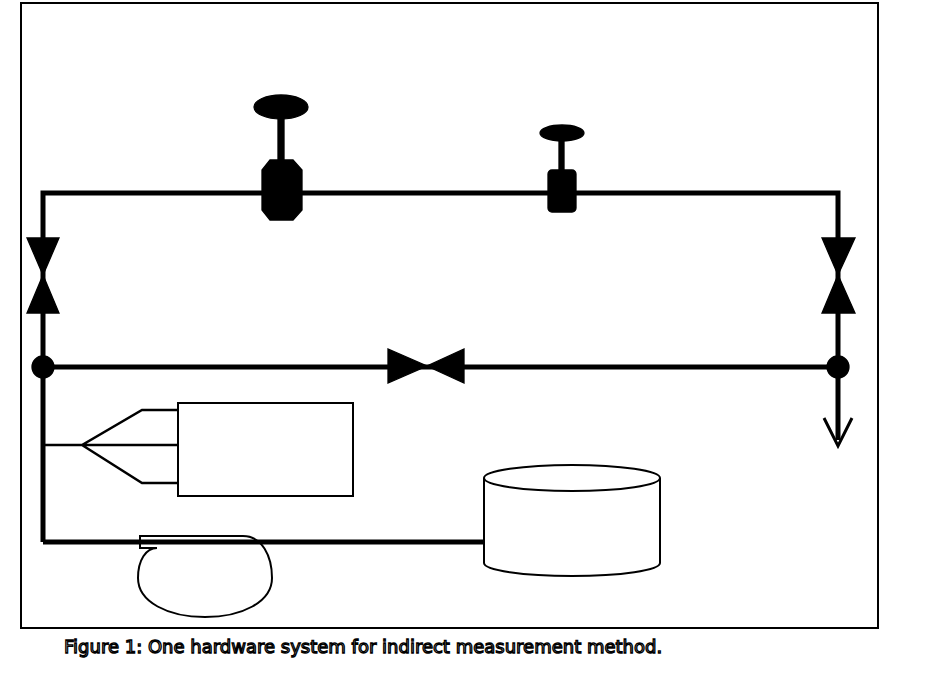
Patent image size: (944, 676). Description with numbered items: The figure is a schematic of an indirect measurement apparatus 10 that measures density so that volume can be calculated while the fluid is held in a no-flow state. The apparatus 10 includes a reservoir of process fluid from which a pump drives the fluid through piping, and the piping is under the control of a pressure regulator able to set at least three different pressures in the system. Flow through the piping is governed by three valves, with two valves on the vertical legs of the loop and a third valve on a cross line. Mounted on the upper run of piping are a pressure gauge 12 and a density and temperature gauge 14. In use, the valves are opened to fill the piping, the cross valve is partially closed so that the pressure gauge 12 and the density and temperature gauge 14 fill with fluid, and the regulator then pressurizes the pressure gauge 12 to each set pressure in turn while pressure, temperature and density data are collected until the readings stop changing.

The apparatus 10 is at (730, 191).
The pressure gauge 12 is at (563, 139).
The density and temperature gauge 14 is at (284, 122).